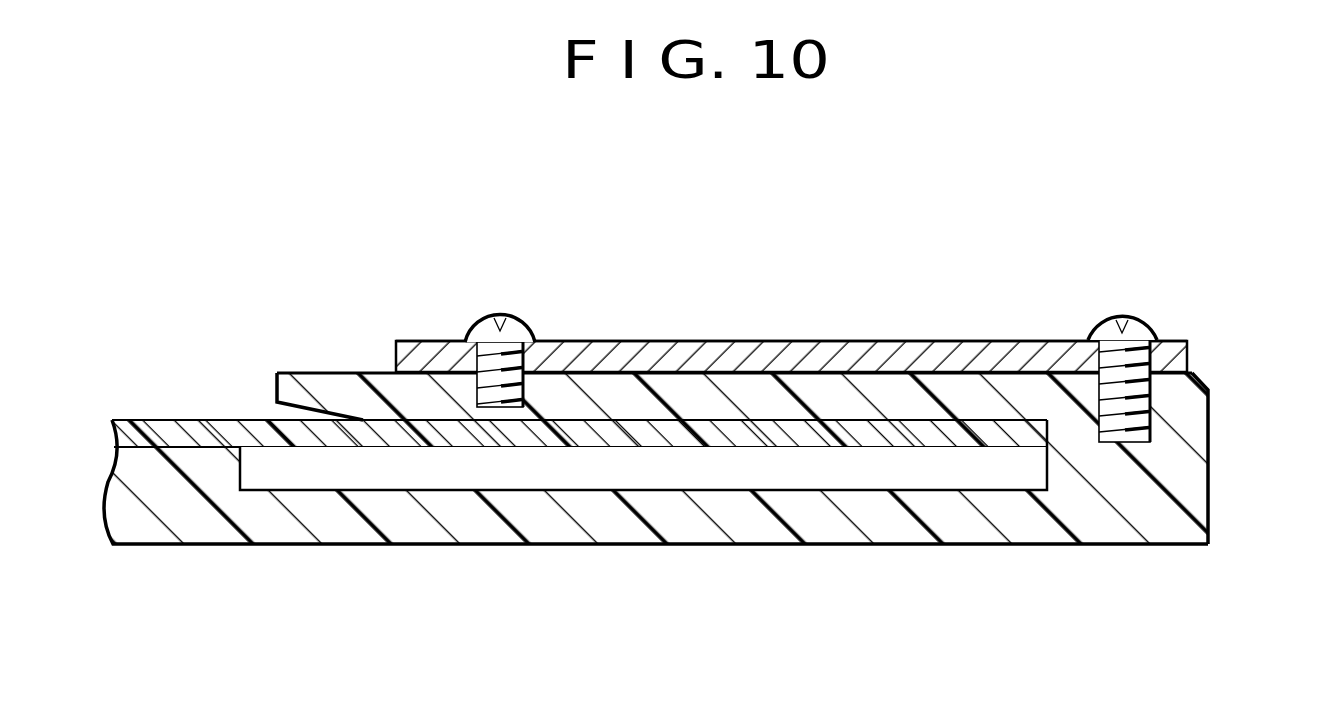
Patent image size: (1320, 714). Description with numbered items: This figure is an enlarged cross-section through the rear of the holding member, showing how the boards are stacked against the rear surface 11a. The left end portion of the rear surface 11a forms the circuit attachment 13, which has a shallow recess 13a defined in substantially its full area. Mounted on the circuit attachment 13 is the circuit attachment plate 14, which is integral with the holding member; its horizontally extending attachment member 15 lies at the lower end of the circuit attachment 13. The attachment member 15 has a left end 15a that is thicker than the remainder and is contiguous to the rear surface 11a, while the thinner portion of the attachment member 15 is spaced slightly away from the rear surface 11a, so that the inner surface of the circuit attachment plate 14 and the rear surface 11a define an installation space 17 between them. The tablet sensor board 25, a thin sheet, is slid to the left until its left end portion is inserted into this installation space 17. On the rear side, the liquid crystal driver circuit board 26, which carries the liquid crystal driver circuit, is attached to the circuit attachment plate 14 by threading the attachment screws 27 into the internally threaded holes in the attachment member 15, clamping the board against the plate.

The rear surface 11a is at (186, 438).
The circuit attachment 13 is at (846, 314).
The shallow recess 13a is at (668, 480).
The circuit attachment plate 14 is at (661, 390).
The attachment member 15 is at (800, 390).
The left end 15a is at (1180, 420).
The installation space 17 is at (428, 432).
The tablet sensor board 25 is at (256, 420).
The liquid crystal driver circuit board 26 is at (975, 340).
The attachment screws 27 is at (518, 318).